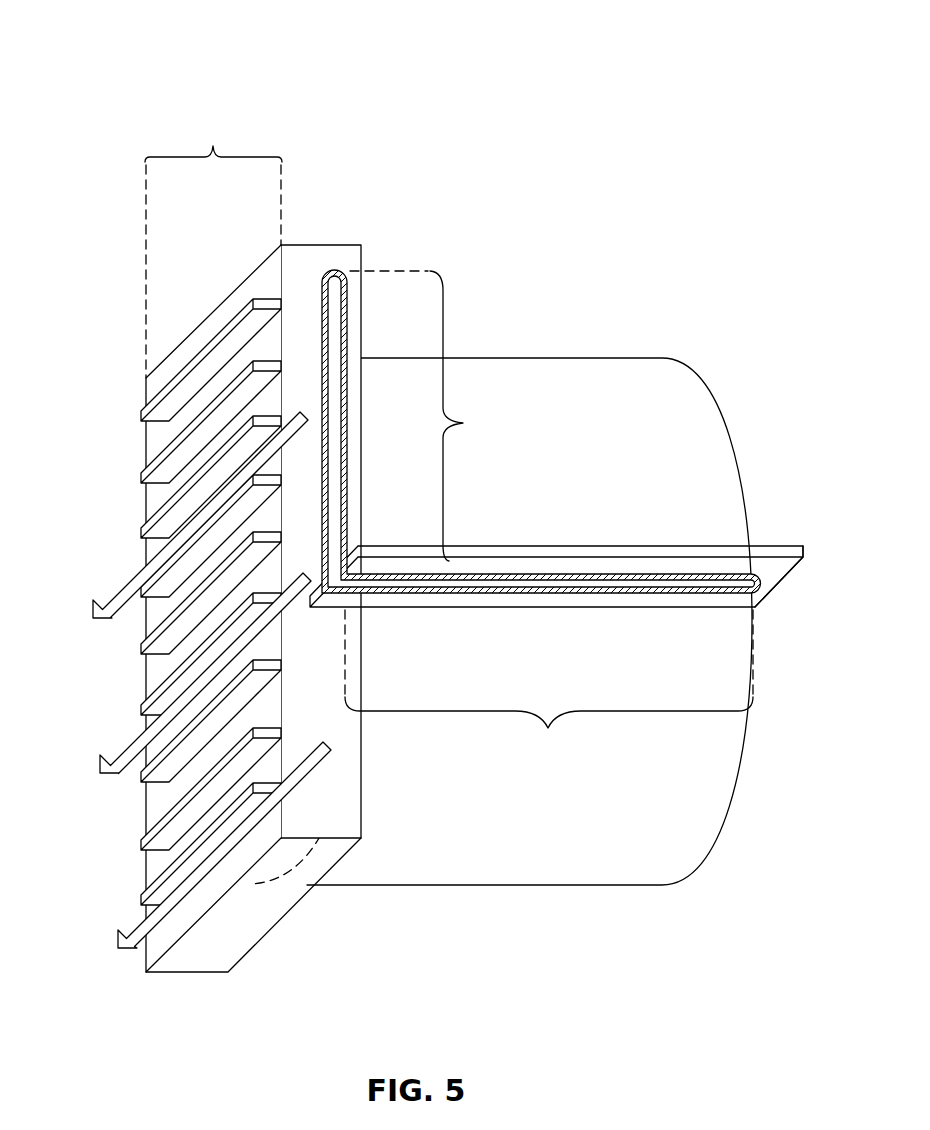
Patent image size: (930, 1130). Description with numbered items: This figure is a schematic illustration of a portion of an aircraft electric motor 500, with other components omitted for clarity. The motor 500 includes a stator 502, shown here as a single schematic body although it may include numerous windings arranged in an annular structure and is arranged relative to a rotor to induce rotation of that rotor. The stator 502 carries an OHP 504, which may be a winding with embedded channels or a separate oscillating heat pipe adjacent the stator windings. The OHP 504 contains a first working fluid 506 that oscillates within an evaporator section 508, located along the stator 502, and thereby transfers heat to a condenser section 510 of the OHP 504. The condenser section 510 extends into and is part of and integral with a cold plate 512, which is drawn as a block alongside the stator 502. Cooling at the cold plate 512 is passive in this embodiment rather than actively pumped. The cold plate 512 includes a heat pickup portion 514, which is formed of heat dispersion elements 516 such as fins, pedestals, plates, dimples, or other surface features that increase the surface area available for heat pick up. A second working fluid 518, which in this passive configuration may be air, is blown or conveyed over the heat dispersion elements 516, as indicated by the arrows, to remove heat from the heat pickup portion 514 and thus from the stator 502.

The aircraft electric motor 500 is at (121, 50).
The stator 502 is at (562, 375).
The OHP 504 is at (768, 553).
The first working fluid 506 is at (570, 548).
The evaporator section 508 is at (549, 688).
The condenser section 510 is at (541, 431).
The cold plate 512 is at (308, 258).
The heat pickup portion 514 is at (213, 247).
The heat dispersion elements 516 is at (140, 408).
The second working fluid 518 is at (130, 580).